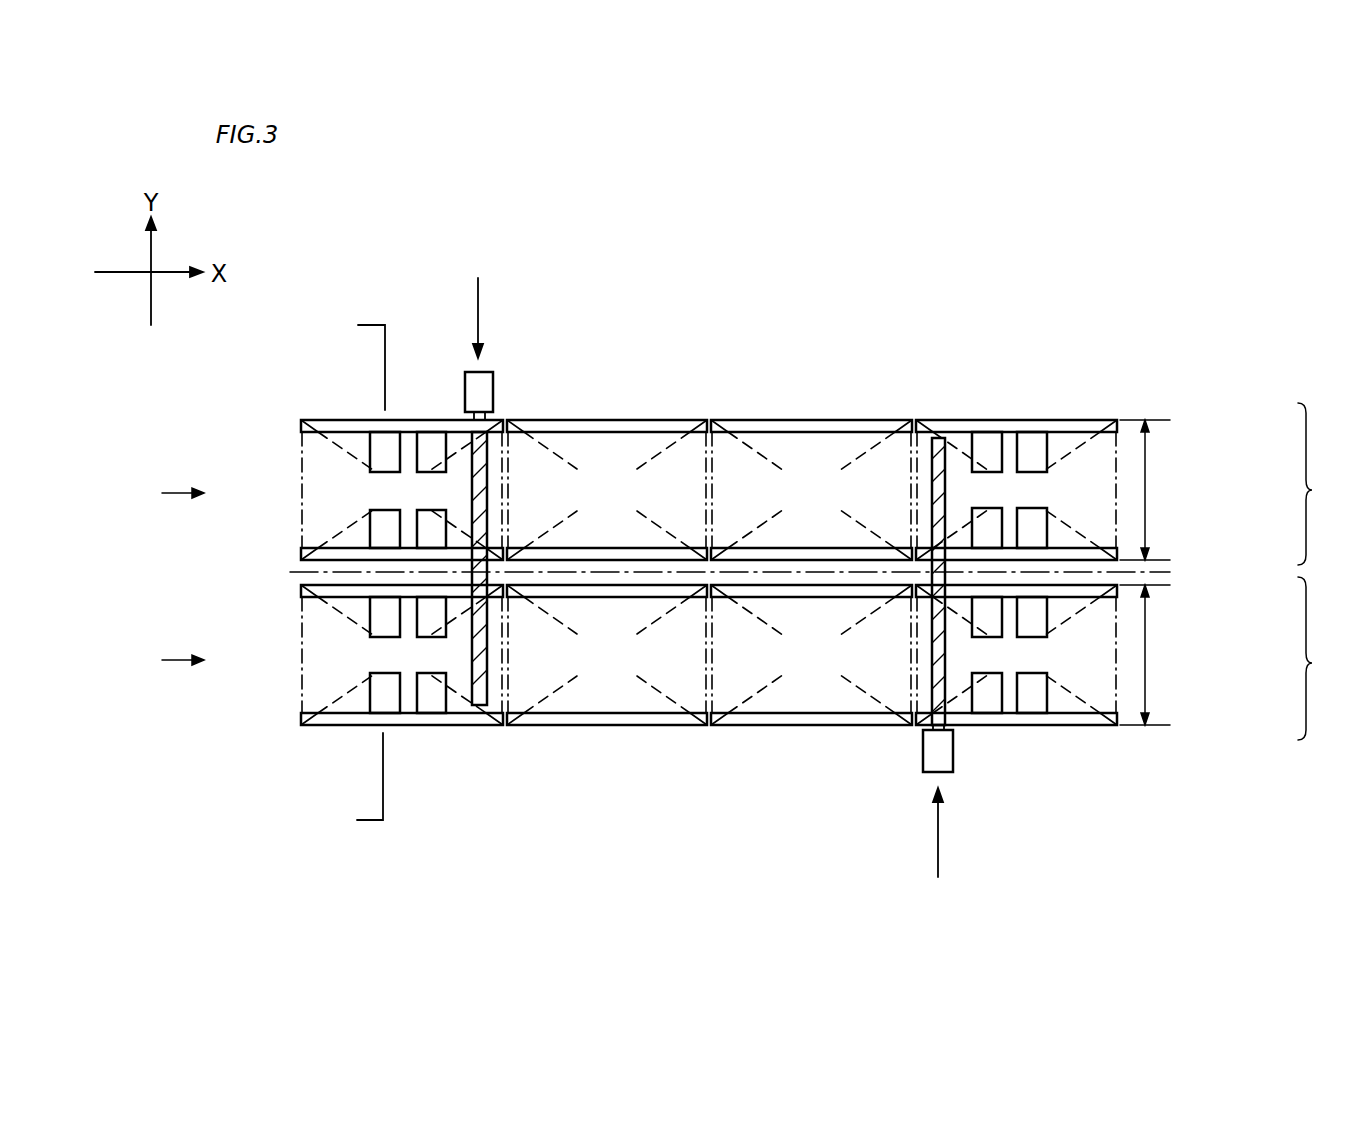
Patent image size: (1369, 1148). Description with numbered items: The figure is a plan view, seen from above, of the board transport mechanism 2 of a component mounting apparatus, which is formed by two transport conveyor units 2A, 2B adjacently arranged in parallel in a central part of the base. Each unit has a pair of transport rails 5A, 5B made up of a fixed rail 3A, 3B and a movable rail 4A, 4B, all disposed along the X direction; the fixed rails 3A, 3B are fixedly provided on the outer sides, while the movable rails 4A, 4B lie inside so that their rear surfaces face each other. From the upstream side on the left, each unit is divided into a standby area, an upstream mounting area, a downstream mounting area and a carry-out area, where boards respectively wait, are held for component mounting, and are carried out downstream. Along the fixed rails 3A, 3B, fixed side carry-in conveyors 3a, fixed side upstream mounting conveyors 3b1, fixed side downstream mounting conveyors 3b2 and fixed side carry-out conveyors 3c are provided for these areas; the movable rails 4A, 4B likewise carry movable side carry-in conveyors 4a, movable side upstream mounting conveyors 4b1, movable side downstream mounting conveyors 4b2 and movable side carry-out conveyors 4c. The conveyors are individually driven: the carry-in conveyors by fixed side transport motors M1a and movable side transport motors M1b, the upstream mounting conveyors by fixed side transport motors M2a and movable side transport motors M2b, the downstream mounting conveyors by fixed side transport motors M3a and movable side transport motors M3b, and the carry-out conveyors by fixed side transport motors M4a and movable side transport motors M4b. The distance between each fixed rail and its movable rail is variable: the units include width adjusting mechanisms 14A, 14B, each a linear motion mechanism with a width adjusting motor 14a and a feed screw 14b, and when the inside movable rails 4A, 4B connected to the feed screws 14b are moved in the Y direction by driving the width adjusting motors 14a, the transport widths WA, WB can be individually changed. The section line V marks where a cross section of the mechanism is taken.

The board transport mechanism 2 is at (763, 247).
The transport conveyor unit 2A is at (164, 493).
The transport conveyor unit 2B is at (164, 660).
The fixed side carry-in conveyor 3a is at (325, 425).
The fixed side upstream mounting conveyor 3b1 is at (600, 425).
The fixed side downstream mounting conveyor 3b2 is at (812, 425).
The fixed side carry-out conveyor 3c is at (930, 427).
The fixed rail 3A is at (1193, 423).
The fixed rail 3B is at (1193, 720).
The movable side carry-in conveyor 4a is at (320, 548).
The movable side upstream mounting conveyor 4b1 is at (650, 555).
The movable side downstream mounting conveyor 4b2 is at (768, 555).
The movable side carry-out conveyor 4c is at (1091, 550).
The movable rail 4A is at (1193, 555).
The movable rail 4B is at (1193, 590).
The pair of transport rails 5A is at (1328, 484).
The pair of transport rails 5B is at (1328, 658).
The width adjusting mechanism 14A is at (489, 303).
The width adjusting mechanism 14B is at (947, 843).
The width adjusting motor 14a is at (480, 378).
The feed screw 14b is at (931, 490).
The fixed side transport motor M1a is at (372, 438).
The movable side transport motor M1b is at (370, 510).
The fixed side transport motor M2a is at (432, 438).
The movable side transport motor M2b is at (442, 507).
The fixed side transport motor M3a is at (995, 435).
The movable side transport motor M3b is at (977, 507).
The fixed side transport motor M4a is at (1025, 437).
The movable side transport motor M4b is at (1043, 508).
The transport width WA is at (1156, 490).
The transport width WB is at (1156, 655).
The section line V- V is at (371, 571).